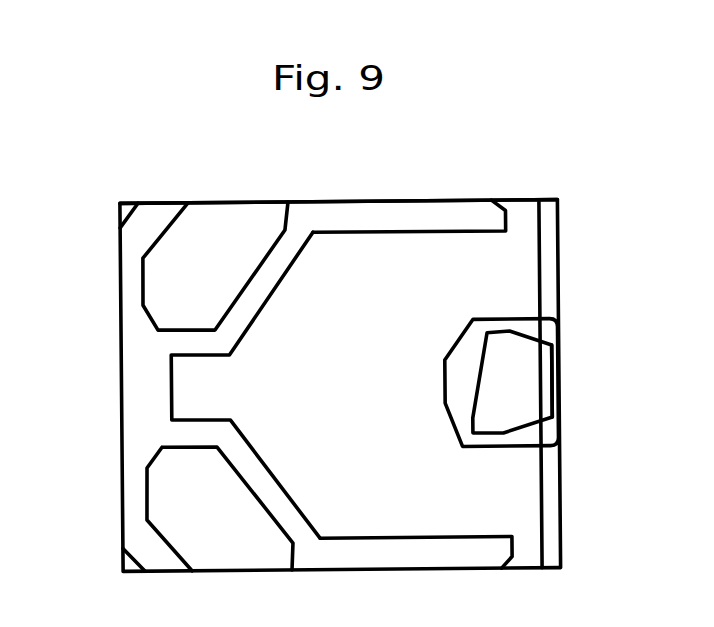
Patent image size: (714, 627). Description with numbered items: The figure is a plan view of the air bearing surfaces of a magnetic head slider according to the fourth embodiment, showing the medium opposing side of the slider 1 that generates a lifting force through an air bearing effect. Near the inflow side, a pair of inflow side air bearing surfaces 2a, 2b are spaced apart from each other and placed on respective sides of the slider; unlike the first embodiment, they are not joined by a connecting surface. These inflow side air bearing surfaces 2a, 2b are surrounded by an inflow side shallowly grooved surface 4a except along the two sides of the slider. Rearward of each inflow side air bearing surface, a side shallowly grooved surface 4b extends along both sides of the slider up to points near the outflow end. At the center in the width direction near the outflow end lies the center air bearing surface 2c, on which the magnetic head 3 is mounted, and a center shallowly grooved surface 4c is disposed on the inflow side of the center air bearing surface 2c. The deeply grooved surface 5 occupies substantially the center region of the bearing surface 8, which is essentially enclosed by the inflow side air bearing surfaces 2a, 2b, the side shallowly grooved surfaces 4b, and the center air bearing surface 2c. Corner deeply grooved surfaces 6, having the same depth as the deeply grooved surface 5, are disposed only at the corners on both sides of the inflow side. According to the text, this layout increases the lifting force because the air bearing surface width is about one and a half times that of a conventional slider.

The slider 1 is at (125, 389).
The inflow side air bearing surface 2a is at (208, 237).
The inflow side air bearing surface 2b is at (207, 505).
The center air bearing surface 2c is at (513, 383).
The magnetic head 3 is at (548, 387).
The inflow side shallowly grooved surface 4a is at (142, 355).
The side shallowly grooved surface 4b is at (375, 218).
The center shallowly grooved surface 4c is at (465, 367).
The deeply grooved surface 5 is at (392, 343).
The corner deeply grooved surface 6 is at (122, 201).
The bearing surface 8 is at (294, 203).